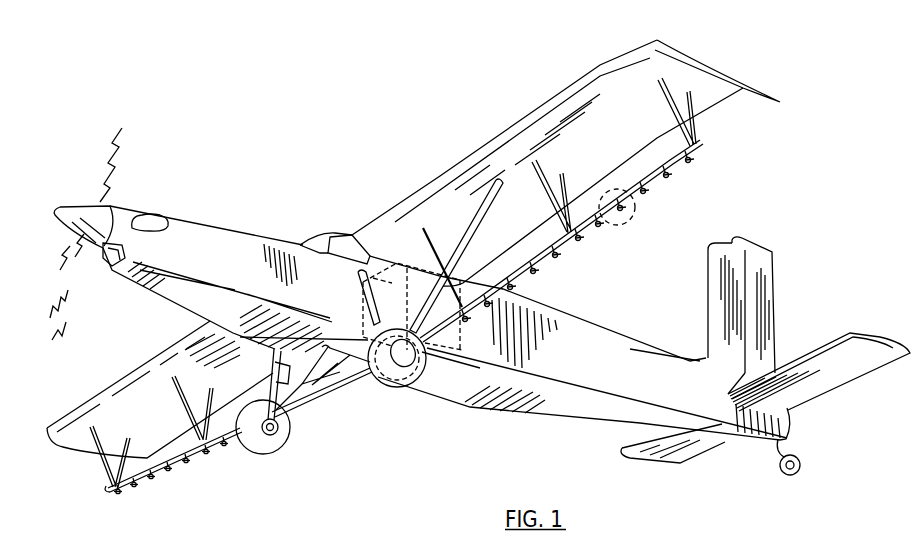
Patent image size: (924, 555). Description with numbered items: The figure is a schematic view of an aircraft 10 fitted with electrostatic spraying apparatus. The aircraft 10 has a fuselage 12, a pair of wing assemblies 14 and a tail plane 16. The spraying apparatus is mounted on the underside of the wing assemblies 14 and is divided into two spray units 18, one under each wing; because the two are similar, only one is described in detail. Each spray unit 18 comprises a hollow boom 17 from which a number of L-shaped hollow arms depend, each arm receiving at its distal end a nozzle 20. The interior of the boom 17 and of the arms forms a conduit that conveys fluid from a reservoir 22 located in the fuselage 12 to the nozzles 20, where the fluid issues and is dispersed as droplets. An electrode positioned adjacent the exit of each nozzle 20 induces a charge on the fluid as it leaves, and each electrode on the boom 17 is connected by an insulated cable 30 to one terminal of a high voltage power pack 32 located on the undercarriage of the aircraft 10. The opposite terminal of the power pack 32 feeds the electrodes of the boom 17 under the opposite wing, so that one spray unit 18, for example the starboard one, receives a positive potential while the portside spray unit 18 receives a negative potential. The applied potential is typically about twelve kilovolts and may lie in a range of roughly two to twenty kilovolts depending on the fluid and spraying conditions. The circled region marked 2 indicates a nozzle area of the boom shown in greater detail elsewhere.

The spray nozzle assembly detail 2 is at (633, 223).
The aircraft 10 is at (452, 413).
The fuselage 12 is at (420, 322).
The wing assemblies 14 is at (455, 170).
The tail plane 16 is at (782, 281).
The hollow boom 17 is at (667, 160).
The spray unit 18 is at (638, 175).
The nozzle 20 is at (672, 183).
The reservoir 22 is at (392, 283).
The insulated cable 30 is at (428, 326).
The high voltage power pack 32 is at (325, 387).